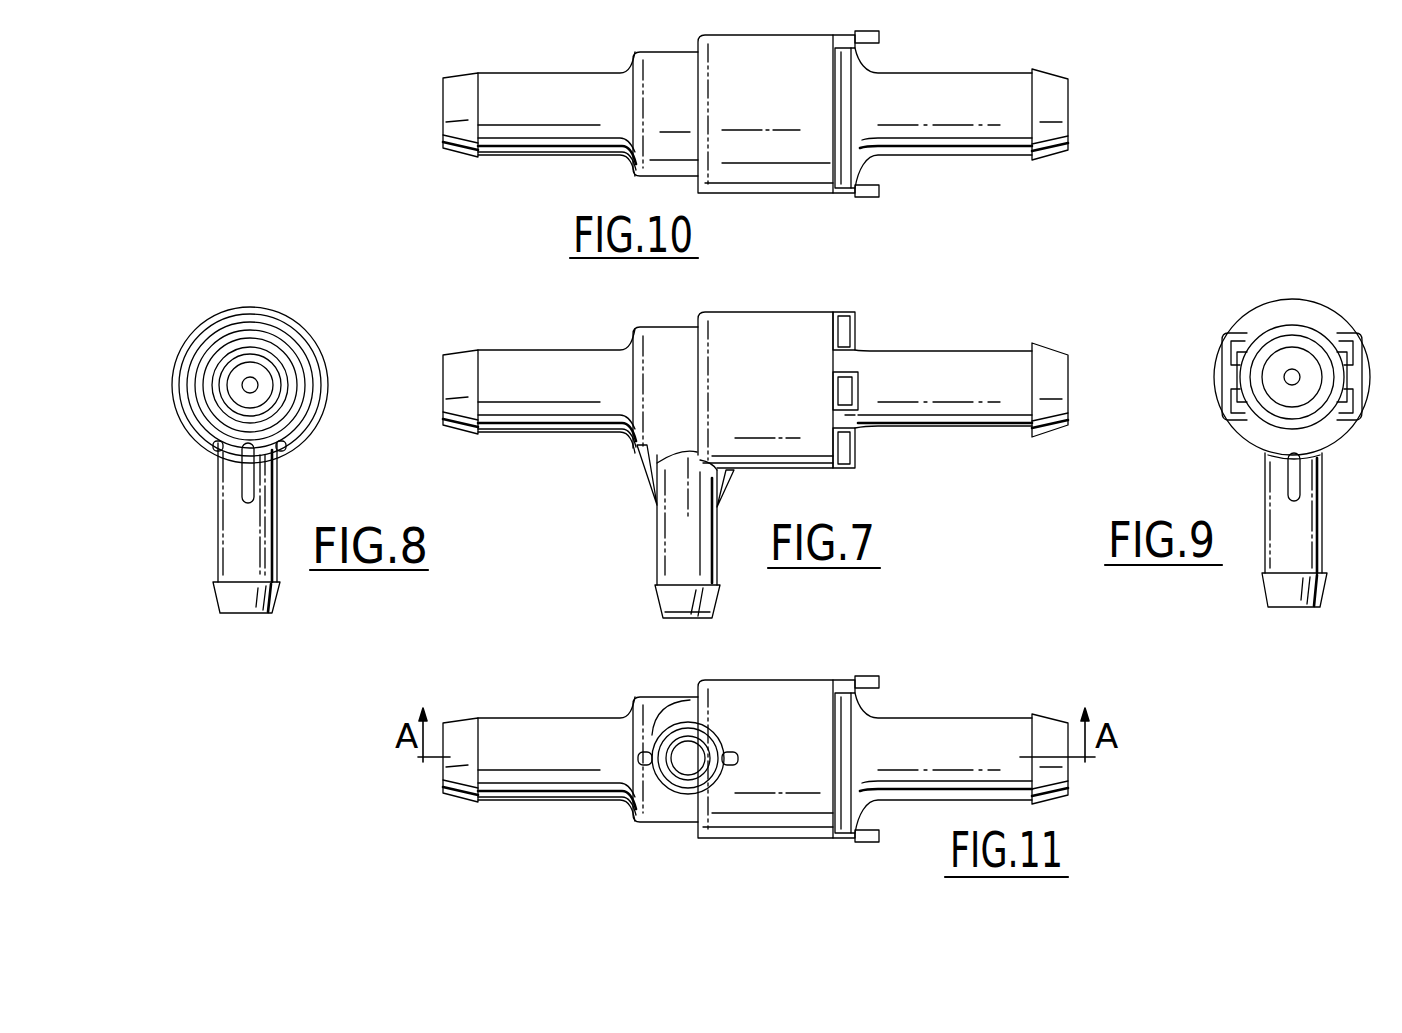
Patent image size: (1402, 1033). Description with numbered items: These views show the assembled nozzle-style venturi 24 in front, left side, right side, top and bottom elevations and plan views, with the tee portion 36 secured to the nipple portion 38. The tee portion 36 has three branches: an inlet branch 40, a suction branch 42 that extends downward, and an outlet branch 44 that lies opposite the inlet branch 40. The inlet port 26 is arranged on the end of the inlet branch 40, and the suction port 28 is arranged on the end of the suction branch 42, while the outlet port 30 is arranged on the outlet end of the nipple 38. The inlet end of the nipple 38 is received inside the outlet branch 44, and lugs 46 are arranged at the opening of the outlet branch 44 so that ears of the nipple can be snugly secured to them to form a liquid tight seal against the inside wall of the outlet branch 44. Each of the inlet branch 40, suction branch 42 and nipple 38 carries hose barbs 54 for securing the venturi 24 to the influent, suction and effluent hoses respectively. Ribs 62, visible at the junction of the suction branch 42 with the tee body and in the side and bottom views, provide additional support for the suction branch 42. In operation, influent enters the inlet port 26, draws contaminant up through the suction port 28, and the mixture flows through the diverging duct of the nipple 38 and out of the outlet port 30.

In FIG. 7, the venturi 24 is at (749, 294).
In FIG. 10, the inlet port 26 is at (440, 128).
In FIG. 7, the inlet port 26 is at (440, 379).
In FIG. 7, the suction port 28 is at (695, 629).
In FIG. 8, the suction port 28 is at (250, 616).
In FIG. 9, the suction port 28 is at (1295, 609).
In FIG. 10, the outlet port 30 is at (1075, 104).
In FIG. 7, the outlet port 30 is at (1073, 374).
In FIG. 10, the tee portion 36 is at (655, 150).
In FIG. 7, the tee portion 36 is at (652, 336).
In FIG. 10, the nipple portion 38 is at (968, 142).
In FIG. 7, the nipple portion 38 is at (948, 359).
In FIG. 11, the nipple portion 38 is at (962, 723).
In FIG. 10, the inlet branch 40 is at (538, 84).
In FIG. 7, the inlet branch 40 is at (520, 358).
In FIG. 11, the inlet branch 40 is at (535, 727).
In FIG. 7, the suction branch 42 is at (660, 528).
In FIG. 8, the suction branch 42 is at (232, 531).
In FIG. 9, the suction branch 42 is at (1310, 521).
In FIG. 11, the suction branch 42 is at (670, 724).
In FIG. 7, the outlet branch 44 is at (825, 323).
In FIG. 10, the lugs 46 is at (879, 40).
In FIG. 7, the lugs 46 is at (880, 432).
In FIG. 11, the lugs 46 is at (879, 690).
In FIG. 7, the hose barbs 54 is at (452, 352).
In FIG. 7, the ribs 62 is at (645, 457).
In FIG. 8, the ribs 62 is at (240, 491).
In FIG. 9, the ribs 62 is at (1296, 489).
In FIG. 11, the ribs 62 is at (735, 754).